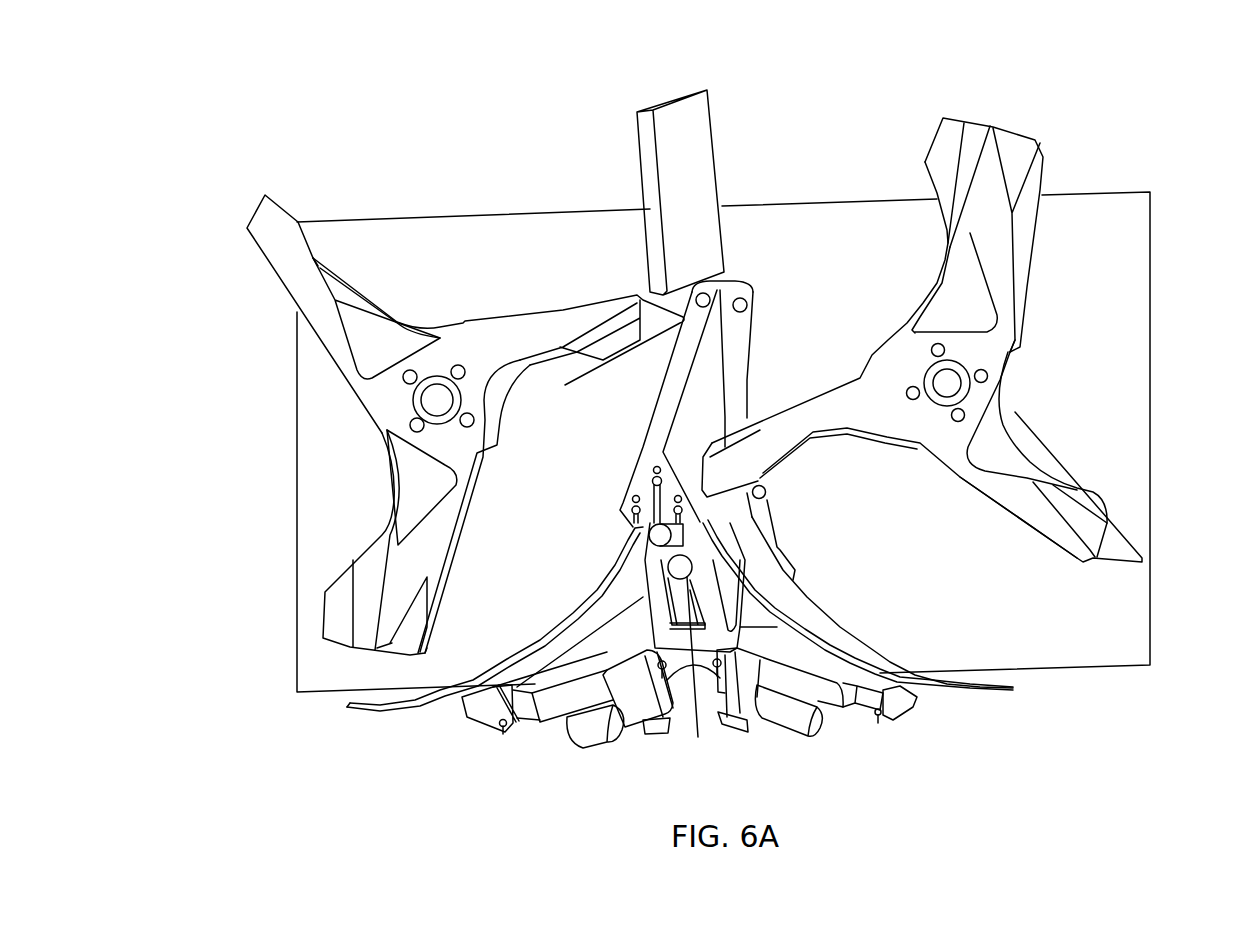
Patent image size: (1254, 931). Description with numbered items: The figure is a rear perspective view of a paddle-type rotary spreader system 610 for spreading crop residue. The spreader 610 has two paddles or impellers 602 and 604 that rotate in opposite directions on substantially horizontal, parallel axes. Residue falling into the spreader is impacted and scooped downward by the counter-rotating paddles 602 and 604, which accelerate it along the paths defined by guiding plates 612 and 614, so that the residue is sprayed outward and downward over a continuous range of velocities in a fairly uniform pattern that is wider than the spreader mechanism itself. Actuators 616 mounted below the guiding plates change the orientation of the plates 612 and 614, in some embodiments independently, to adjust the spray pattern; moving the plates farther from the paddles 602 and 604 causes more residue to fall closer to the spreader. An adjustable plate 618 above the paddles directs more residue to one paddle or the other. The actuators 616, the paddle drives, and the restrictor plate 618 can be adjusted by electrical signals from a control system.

The paddle-type rotary spreader system 610 is at (459, 140).
The paddle 602 is at (390, 413).
The paddle 604 is at (1017, 413).
The guiding plate 612 is at (450, 702).
The guiding plate 614 is at (933, 690).
The actuators 616 is at (787, 713).
The plate 618 is at (690, 152).